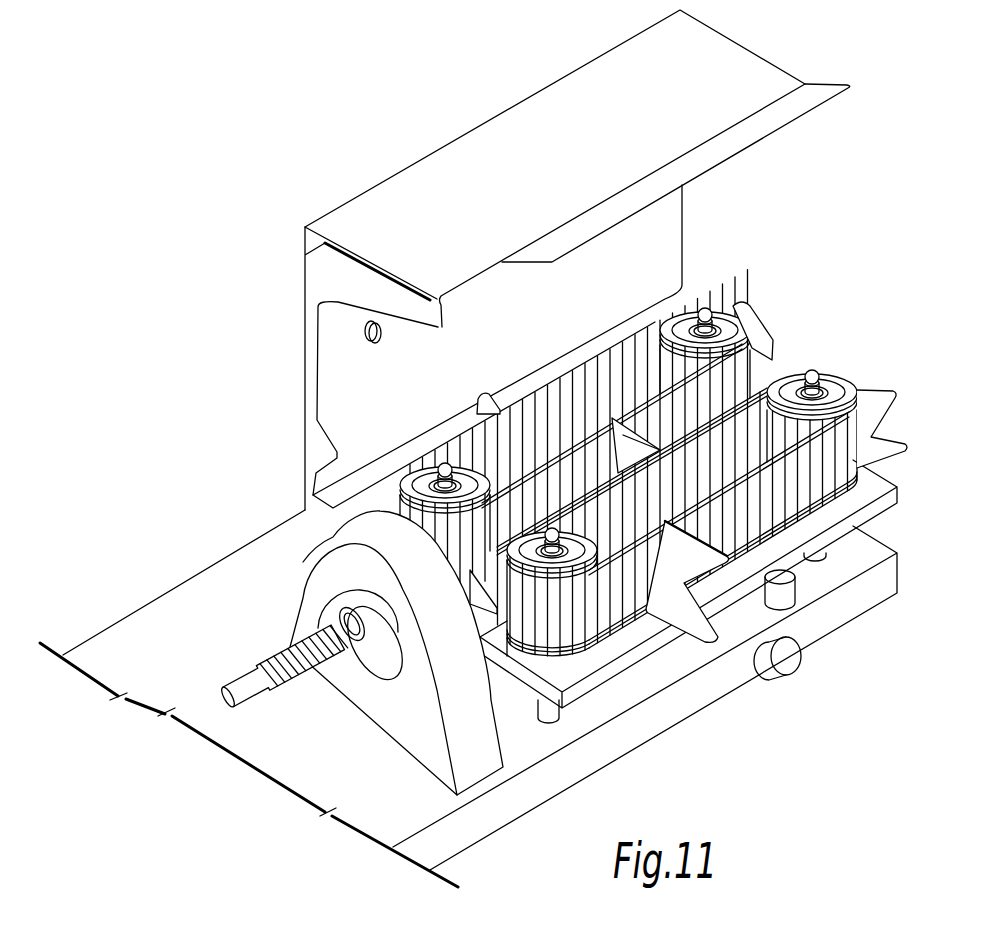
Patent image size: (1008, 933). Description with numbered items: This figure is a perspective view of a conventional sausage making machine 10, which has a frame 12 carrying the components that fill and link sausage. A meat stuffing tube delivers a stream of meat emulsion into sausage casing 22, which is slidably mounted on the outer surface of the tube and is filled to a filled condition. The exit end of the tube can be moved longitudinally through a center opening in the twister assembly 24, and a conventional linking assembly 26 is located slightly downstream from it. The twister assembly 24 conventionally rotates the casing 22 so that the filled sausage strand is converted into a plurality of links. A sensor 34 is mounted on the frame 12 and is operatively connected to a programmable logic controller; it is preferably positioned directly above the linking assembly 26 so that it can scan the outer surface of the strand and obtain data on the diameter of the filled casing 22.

The sausage making machine 10 is at (559, 440).
The frame 12 is at (179, 653).
The sausage casing 22 is at (270, 664).
The twister assembly 24 is at (308, 605).
The linking assembly 26 is at (774, 370).
The sensor 34 is at (382, 342).